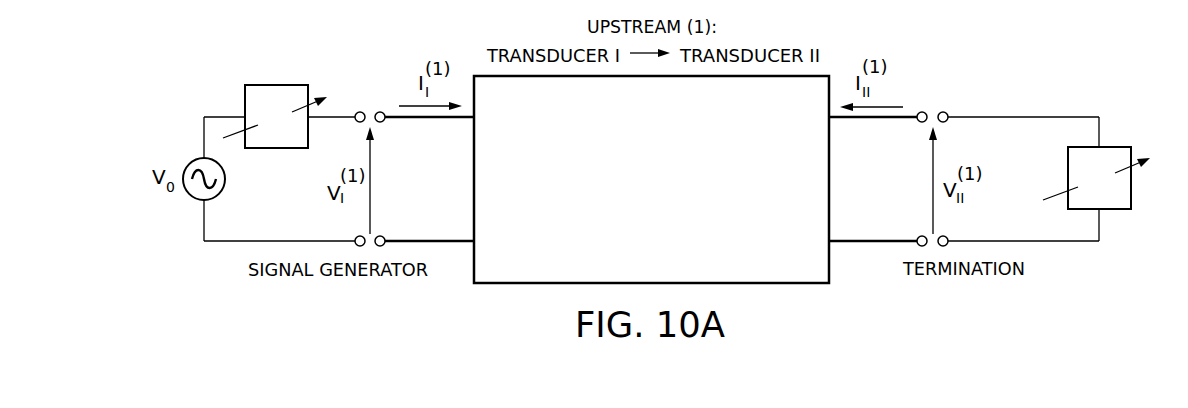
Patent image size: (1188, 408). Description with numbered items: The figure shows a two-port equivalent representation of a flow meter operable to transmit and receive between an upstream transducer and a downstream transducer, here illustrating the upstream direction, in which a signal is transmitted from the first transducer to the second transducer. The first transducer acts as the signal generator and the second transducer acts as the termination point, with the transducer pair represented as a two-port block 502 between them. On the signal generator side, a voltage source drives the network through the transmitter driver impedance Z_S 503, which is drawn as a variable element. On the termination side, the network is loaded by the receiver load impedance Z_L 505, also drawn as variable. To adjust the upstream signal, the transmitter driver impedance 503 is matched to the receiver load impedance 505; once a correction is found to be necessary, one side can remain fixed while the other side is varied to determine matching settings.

The transducer pair / device under test 502 is at (670, 194).
The transmitter driver impedance Z_S 503 is at (277, 84).
The receiver load impedance Z_L 505 is at (1121, 147).